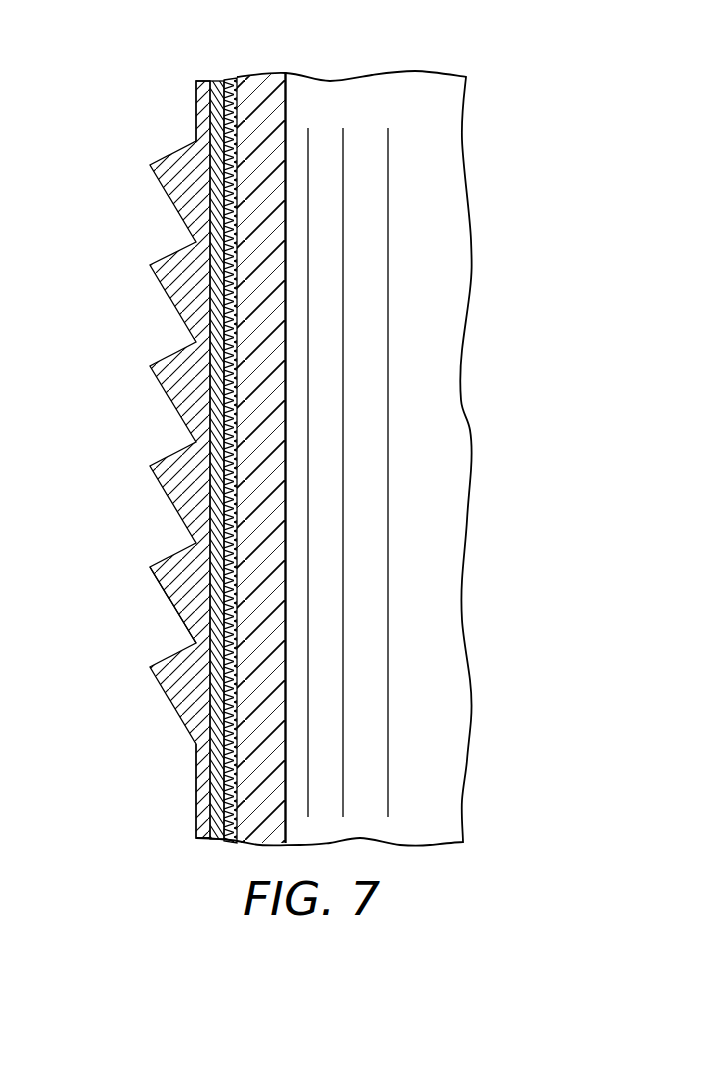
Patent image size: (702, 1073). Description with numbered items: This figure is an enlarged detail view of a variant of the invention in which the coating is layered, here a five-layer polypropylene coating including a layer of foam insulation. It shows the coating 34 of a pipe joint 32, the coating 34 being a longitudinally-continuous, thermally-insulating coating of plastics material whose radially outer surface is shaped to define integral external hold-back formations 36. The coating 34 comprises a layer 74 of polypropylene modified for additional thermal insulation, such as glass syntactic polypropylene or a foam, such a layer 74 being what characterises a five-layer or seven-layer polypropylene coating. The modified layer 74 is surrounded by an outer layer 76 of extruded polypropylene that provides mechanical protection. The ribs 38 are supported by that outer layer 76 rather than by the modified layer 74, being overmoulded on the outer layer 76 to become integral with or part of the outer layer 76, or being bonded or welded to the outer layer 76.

The pipe joint 32 is at (493, 222).
The coating 34 is at (231, 71).
The hold-back formations 36 is at (129, 397).
The ribs 38 is at (159, 582).
The layer of PP modified for additional thermal insulation 74 is at (210, 104).
The outer layer 76 is at (197, 138).